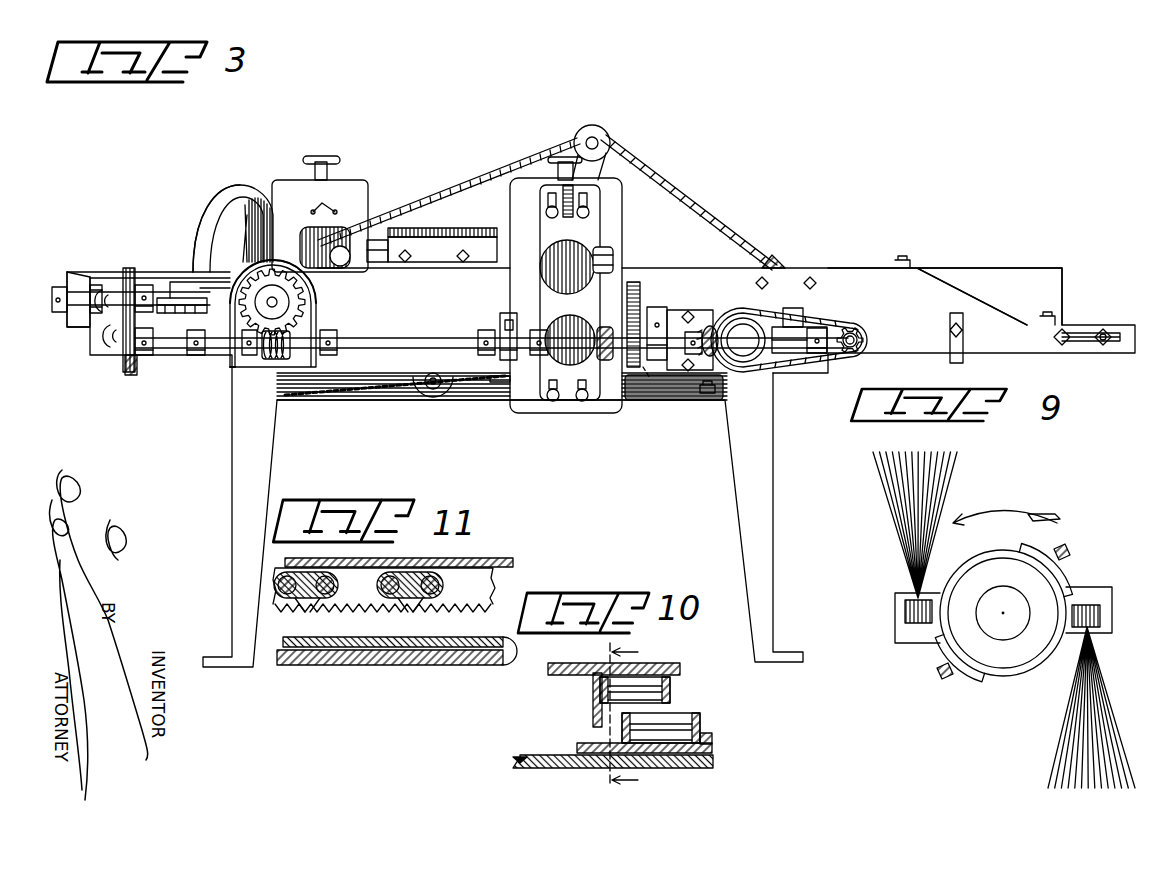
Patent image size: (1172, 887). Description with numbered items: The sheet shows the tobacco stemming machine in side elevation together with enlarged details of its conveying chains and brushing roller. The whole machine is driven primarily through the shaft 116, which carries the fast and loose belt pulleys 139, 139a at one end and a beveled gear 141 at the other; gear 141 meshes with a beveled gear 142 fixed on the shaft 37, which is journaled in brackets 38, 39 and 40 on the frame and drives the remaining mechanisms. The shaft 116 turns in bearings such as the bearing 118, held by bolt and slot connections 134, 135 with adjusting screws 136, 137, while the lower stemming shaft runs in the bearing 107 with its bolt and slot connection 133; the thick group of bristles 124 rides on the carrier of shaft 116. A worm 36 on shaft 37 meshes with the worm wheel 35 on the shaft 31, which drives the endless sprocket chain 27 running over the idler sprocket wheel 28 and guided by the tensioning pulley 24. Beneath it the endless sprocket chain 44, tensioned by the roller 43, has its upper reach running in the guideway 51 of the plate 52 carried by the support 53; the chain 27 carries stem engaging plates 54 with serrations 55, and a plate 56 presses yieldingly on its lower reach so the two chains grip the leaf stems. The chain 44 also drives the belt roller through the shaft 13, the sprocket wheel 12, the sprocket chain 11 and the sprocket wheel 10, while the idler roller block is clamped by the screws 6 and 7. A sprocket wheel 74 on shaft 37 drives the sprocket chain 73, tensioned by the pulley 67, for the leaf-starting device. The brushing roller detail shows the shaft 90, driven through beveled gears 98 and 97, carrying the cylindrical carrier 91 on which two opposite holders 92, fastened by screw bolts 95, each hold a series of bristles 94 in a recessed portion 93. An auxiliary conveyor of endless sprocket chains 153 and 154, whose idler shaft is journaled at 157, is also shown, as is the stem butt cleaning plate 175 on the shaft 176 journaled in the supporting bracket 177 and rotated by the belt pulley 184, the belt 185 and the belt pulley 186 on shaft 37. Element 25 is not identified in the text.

In FIG. 3, the clamping screw 6 is at (1104, 331).
In FIG. 3, the clamping screw 7 is at (1063, 332).
In FIG. 3, the sprocket wheel 10 is at (747, 313).
In FIG. 3, the sprocket chain 11 is at (840, 323).
In FIG. 10, the sprocket chain 11 is at (627, 717).
In FIG. 3, the sprocket wheel 12 is at (863, 337).
In FIG. 3, the shaft 13 is at (850, 346).
In FIG. 3, the guiding and tensioning pulley 24 is at (597, 127).
In FIG. 3, the frame bracket 25 is at (970, 273).
In FIG. 3, the endless sprocket chain 27 is at (458, 174).
In FIG. 10, the endless sprocket chain 27 is at (672, 690).
In FIG. 3, the idler sprocket wheel 28 is at (773, 262).
In FIG. 3, the shaft 31 is at (278, 303).
In FIG. 3, the worm wheel 35 is at (317, 288).
In FIG. 3, the worm 36 is at (283, 363).
In FIG. 3, the shaft 37 is at (387, 337).
In FIG. 3, the bracket 38 is at (210, 357).
In FIG. 3, the bracket 39 is at (500, 321).
In FIG. 3, the bracket 40 is at (793, 330).
In FIG. 3, the guiding and tensioning roller 43 is at (433, 398).
In FIG. 3, the endless sprocket chain 44 is at (497, 393).
In FIG. 10, the endless sprocket chain 44 is at (696, 713).
In FIG. 10, the guideway 51 is at (710, 735).
In FIG. 11, the plate 52 is at (512, 655).
In FIG. 10, the plate 52 is at (712, 748).
In FIG. 11, the support 53 is at (450, 667).
In FIG. 10, the support 53 is at (700, 768).
In FIG. 11, the stem engaging plate 54 is at (496, 588).
In FIG. 10, the stem engaging plate 54 is at (593, 714).
In FIG. 11, the serrations 55 is at (362, 615).
In FIG. 11, the plate 56 is at (485, 558).
In FIG. 10, the plate 56 is at (670, 663).
In FIG. 3, the guiding and tensioning pulley 67 is at (640, 300).
In FIG. 3, the sprocket chain 73 is at (657, 307).
In FIG. 3, the sprocket wheel 74 is at (655, 385).
In FIG. 9, the shaft 90 is at (1010, 640).
In FIG. 9, the carrier 91 is at (1033, 595).
In FIG. 9, the holder 92 is at (1037, 548).
In FIG. 9, the recessed portion 93 is at (895, 618).
In FIG. 9, the bristles 94 is at (884, 500).
In FIG. 9, the screw bolt 95 is at (1068, 548).
In FIG. 3, the beveled gear 97 is at (713, 307).
In FIG. 3, the beveled gear 98 is at (703, 327).
In FIG. 3, the bearing 107 is at (547, 317).
In FIG. 3, the shaft 116 is at (373, 257).
In FIG. 3, the bearing 118 is at (585, 240).
In FIG. 3, the bristles 124 is at (447, 233).
In FIG. 3, the bolt and slot connection 133 is at (582, 401).
In FIG. 3, the bolt and slot connection 134 is at (320, 226).
In FIG. 3, the bolt and slot connection 135 is at (547, 208).
In FIG. 3, the adjusting screw 136 is at (330, 157).
In FIG. 3, the adjusting screw 137 is at (562, 155).
In FIG. 3, the fast belt pulley 139 is at (257, 188).
In FIG. 3, the loose belt pulley 139a is at (225, 188).
In FIG. 3, the beveled gear 141 is at (627, 393).
In FIG. 3, the beveled gear 142 is at (600, 313).
In FIG. 3, the endless sprocket chain 153 is at (187, 282).
In FIG. 3, the endless sprocket chain 154 is at (112, 336).
In FIG. 3, the journal 157 is at (93, 333).
In FIG. 3, the plate 175 is at (177, 297).
In FIG. 3, the shaft 176 is at (158, 293).
In FIG. 3, the supporting bracket 177 is at (72, 272).
In FIG. 3, the belt pulley 184 is at (127, 273).
In FIG. 3, the belt 185 is at (130, 270).
In FIG. 3, the belt pulley 186 is at (130, 370).